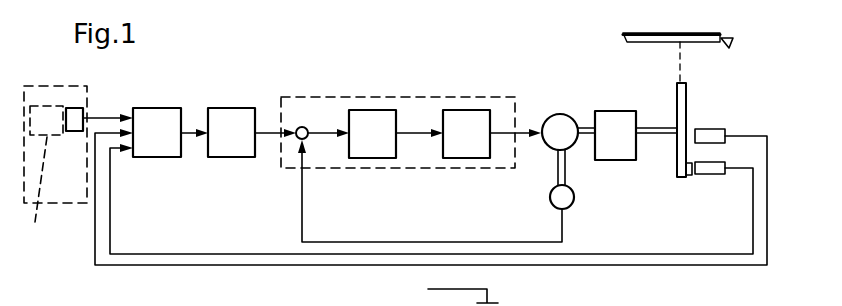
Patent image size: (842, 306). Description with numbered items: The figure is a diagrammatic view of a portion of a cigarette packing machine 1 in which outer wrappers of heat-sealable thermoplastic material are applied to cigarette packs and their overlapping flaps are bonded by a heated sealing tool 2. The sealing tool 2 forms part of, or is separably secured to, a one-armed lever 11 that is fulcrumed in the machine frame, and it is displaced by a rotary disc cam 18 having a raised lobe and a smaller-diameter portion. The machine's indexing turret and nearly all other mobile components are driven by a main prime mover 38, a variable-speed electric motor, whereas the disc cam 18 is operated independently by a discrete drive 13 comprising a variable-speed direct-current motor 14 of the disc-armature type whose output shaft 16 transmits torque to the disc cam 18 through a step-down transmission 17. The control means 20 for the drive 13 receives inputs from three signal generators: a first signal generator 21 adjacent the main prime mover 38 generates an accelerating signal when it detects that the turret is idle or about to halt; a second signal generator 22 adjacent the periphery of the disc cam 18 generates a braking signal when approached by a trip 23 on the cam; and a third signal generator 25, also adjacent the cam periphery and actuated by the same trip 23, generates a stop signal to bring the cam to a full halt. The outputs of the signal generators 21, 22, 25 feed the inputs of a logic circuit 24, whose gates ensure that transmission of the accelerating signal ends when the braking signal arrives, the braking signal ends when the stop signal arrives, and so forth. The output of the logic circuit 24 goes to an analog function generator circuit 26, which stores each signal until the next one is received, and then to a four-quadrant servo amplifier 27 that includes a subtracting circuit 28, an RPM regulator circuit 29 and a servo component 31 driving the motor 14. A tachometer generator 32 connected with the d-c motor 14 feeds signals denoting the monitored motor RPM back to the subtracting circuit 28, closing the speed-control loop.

The cigarette packing machine 1 is at (71, 218).
The sealing tool 2 is at (731, 47).
The one-armed lever 11 is at (662, 12).
The discrete drive 13 is at (595, 96).
The variable-speed direct-current motor 14 is at (560, 113).
The output shaft 16 is at (587, 134).
The step-down transmission 17 is at (615, 117).
The disc cam 18 is at (687, 116).
The control means 20 is at (276, 56).
The first signal generator 21 is at (78, 105).
The second signal generator 22 is at (723, 128).
The trip 23 is at (693, 178).
The logic circuit 24 is at (161, 117).
The third signal generator 25 is at (722, 174).
The analog function generator circuit 26 is at (233, 115).
The four-quadrant servo amplifier 27 is at (406, 97).
The subtracting circuit 28 is at (304, 127).
The RPM regulator circuit 29 is at (370, 115).
The servo component 31 is at (467, 118).
The tachometer generator 32 is at (549, 192).
The main prime mover 38 is at (36, 177).